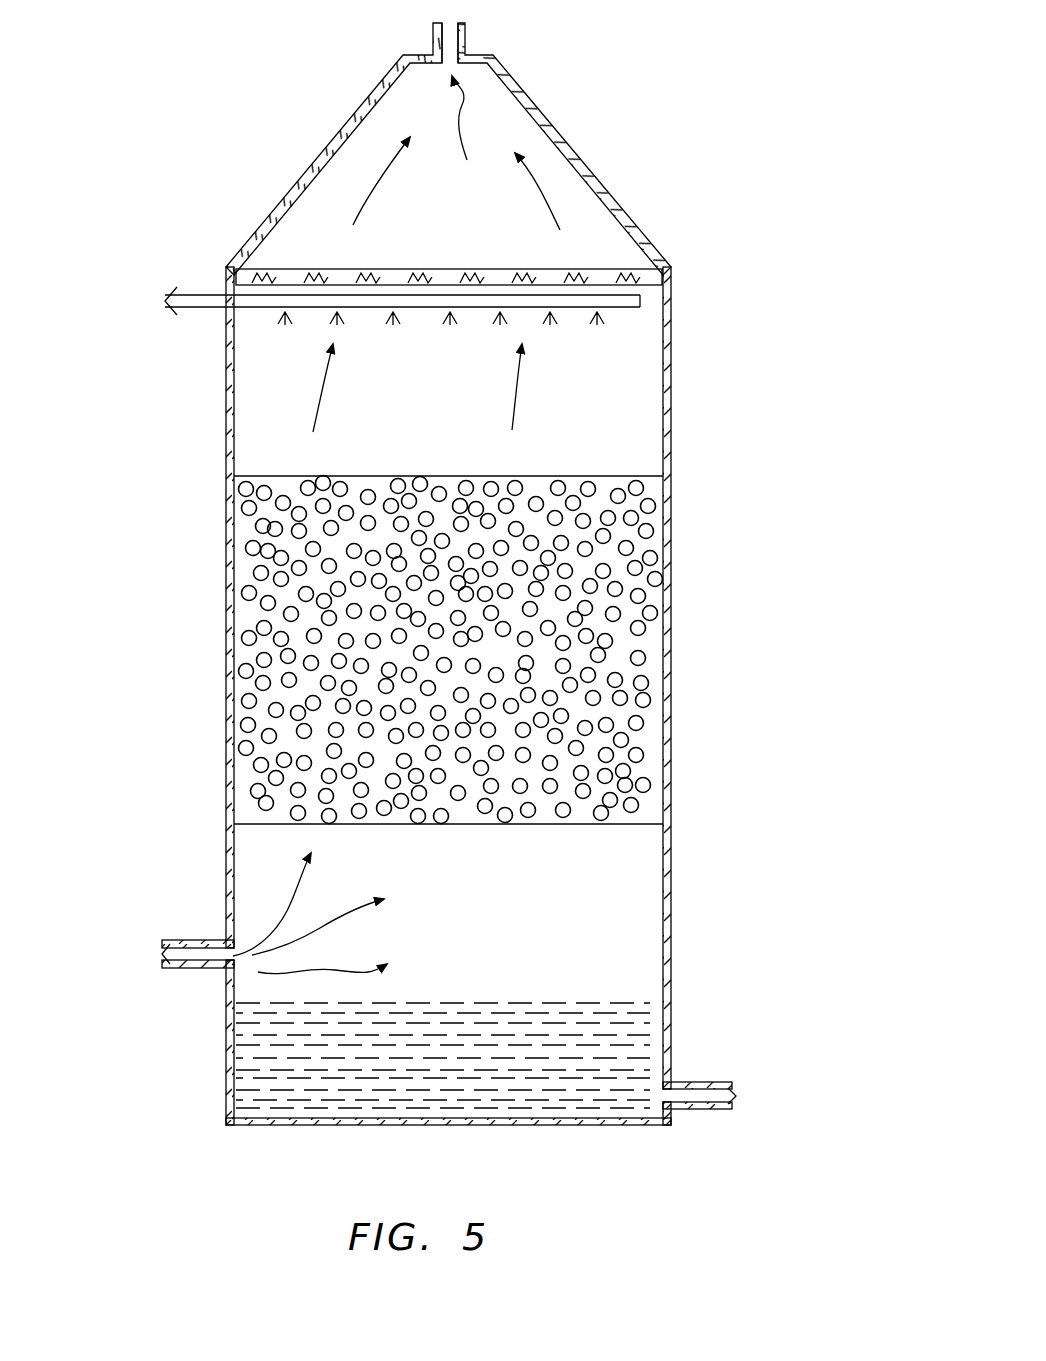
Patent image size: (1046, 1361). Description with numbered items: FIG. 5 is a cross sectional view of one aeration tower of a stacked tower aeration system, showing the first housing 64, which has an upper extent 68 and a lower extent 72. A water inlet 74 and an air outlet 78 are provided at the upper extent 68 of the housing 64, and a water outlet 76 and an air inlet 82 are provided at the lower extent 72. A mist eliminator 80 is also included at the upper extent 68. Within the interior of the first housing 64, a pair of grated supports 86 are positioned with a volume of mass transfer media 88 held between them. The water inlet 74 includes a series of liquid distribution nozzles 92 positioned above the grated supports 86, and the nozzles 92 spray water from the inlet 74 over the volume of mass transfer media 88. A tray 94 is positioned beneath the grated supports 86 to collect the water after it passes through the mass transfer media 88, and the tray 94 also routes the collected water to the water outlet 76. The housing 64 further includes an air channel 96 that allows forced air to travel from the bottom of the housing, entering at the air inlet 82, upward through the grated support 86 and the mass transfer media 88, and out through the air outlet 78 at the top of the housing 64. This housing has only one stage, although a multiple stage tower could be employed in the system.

The first housing 64 is at (692, 171).
The upper extent 68 is at (305, 270).
The lower extent 72 is at (253, 1103).
The water inlet 74 is at (205, 310).
The water outlet 76 is at (703, 1085).
The air outlet 78 is at (465, 42).
The mist eliminator 80 is at (643, 307).
The air inlet 82 is at (197, 968).
The grated supports 86 is at (620, 474).
The mass transfer media 88 is at (600, 643).
The liquid distribution nozzles 92 is at (615, 338).
The tray 94 is at (560, 1130).
The air channel 96 is at (510, 207).